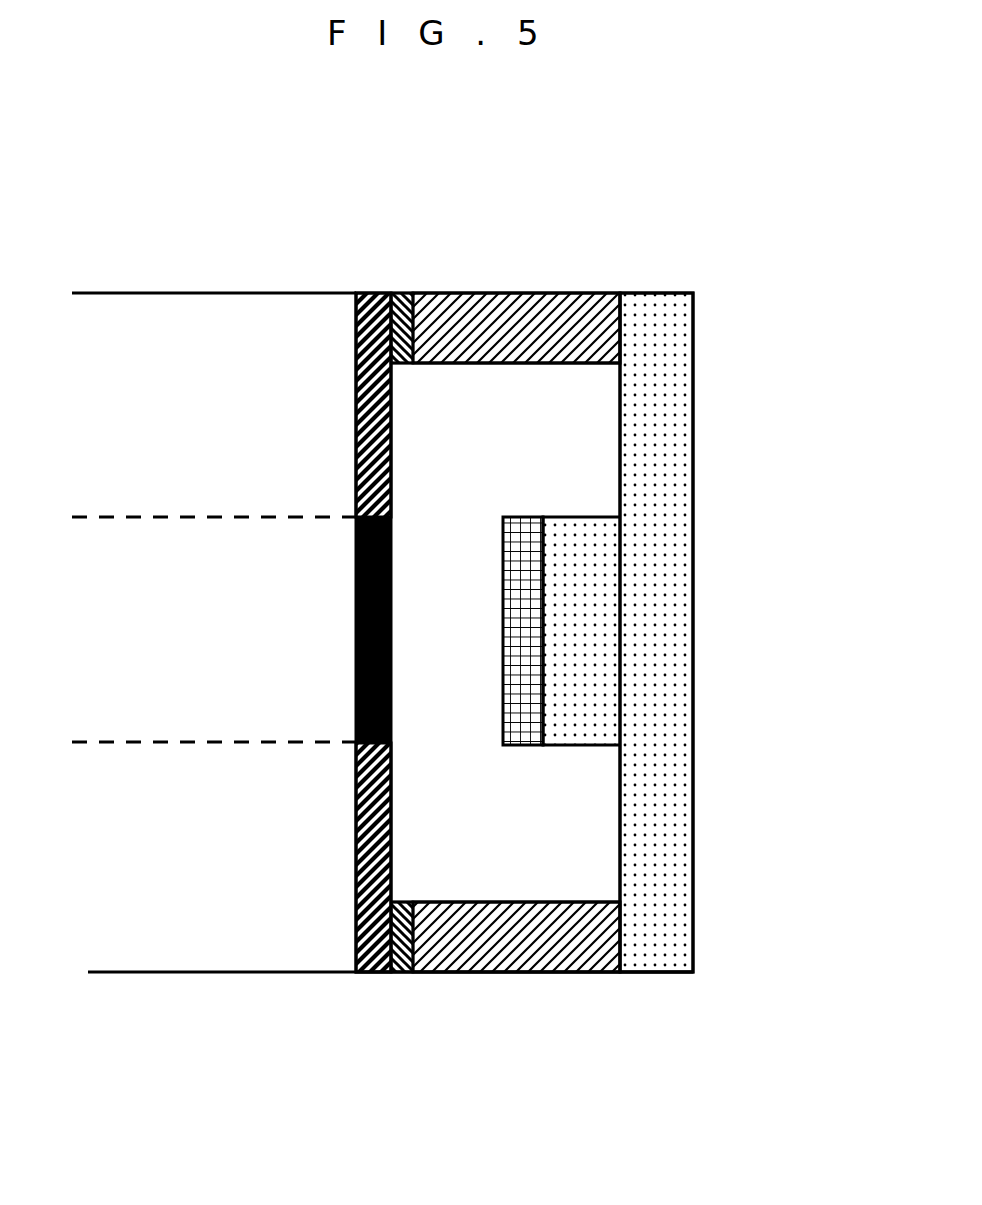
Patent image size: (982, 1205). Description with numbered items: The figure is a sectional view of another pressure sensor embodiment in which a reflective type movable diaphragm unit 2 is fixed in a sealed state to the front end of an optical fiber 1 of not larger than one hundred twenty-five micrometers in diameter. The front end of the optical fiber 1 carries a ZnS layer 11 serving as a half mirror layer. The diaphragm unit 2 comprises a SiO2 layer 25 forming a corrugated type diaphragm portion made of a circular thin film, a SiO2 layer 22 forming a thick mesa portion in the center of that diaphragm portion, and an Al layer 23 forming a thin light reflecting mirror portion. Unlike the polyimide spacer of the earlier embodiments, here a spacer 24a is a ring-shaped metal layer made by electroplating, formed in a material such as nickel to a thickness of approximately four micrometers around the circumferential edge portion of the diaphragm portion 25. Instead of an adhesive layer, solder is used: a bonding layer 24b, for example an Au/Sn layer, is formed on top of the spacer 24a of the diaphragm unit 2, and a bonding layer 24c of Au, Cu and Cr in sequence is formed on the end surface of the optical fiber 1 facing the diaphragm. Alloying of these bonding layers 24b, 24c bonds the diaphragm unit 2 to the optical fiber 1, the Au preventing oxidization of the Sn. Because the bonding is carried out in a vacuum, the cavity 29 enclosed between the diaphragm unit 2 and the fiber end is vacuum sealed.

The optical fiber 1 is at (237, 930).
The reflective type movable diaphragm unit 2 is at (698, 611).
The ZnS layer (half mirror layer) 11 is at (356, 548).
The SiO2 layer (mesa portion) 22 is at (572, 720).
The Al layer (light reflecting mirror portion) 23 is at (530, 623).
The spacer 24a is at (550, 325).
The bonding layer 24b is at (402, 362).
The bonding layer 24c is at (356, 430).
The SiO2 layer (corrugated type diaphragm portion) 25 is at (663, 447).
The cavity 29 is at (427, 650).